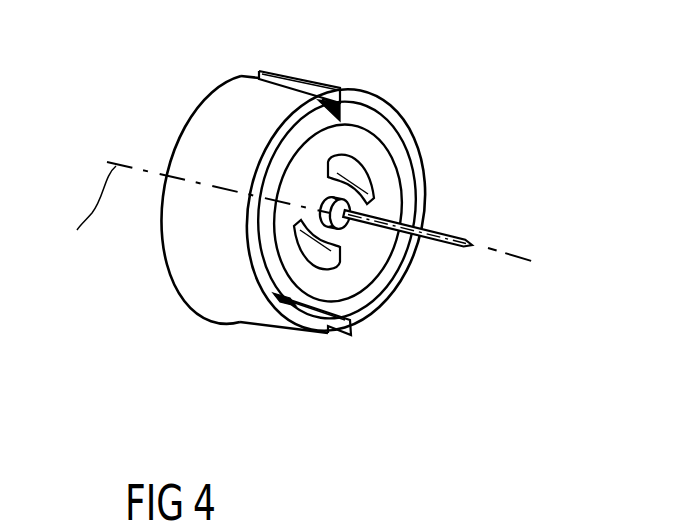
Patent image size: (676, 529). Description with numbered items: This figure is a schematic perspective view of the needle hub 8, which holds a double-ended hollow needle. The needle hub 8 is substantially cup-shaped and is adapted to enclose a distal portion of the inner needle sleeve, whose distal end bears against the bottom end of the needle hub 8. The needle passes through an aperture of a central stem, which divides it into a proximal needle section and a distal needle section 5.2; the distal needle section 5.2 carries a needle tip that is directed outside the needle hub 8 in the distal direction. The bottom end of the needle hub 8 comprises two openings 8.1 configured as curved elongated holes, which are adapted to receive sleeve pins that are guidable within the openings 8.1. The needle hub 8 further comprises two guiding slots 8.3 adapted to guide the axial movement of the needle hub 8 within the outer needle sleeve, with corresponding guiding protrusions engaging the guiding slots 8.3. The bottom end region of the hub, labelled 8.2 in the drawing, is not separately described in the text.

The needle hub 8 is at (217, 84).
The openings 8.1 is at (360, 162).
The face plate 8.2 is at (370, 288).
The guiding slots 8.3 is at (302, 76).
The distal needle section 5.2 is at (446, 238).